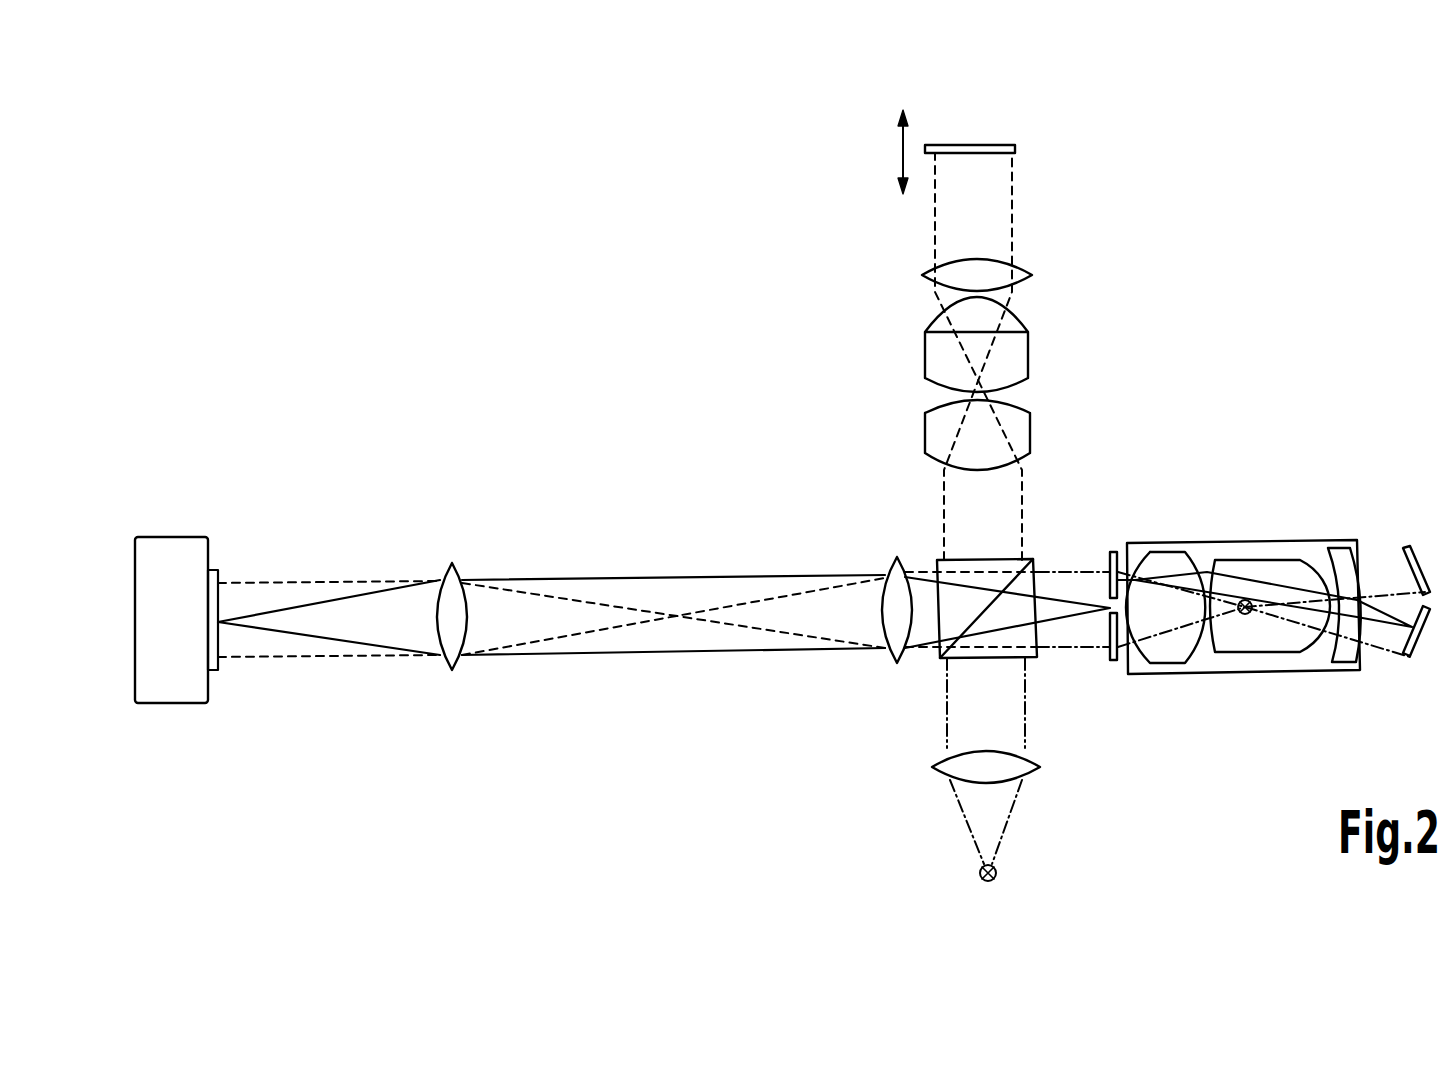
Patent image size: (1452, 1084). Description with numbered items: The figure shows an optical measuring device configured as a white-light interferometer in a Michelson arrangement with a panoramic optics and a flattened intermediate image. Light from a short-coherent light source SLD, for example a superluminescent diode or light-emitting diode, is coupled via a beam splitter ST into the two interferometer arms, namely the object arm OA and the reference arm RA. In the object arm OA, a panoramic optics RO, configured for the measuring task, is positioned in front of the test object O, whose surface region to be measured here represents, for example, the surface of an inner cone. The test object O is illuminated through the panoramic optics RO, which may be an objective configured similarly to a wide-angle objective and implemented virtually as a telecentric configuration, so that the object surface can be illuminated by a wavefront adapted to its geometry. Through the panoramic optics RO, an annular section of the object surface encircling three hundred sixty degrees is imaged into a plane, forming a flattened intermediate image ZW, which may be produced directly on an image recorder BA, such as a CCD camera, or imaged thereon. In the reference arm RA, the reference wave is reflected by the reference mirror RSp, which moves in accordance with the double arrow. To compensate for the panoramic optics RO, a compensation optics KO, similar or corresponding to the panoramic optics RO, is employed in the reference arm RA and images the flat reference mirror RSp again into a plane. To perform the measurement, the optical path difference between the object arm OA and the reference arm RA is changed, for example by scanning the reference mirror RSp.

The image recorder BA is at (220, 563).
The beam splitter ST is at (927, 665).
The reference arm RA is at (1067, 310).
The reference mirror RSp is at (1030, 147).
The compensation optics KO is at (920, 350).
The flattened intermediate image ZW is at (1108, 545).
The object arm OA is at (1103, 683).
The panoramic optics RO is at (1287, 538).
The test object O is at (1405, 548).
The short-coherent light source SLD is at (1004, 778).